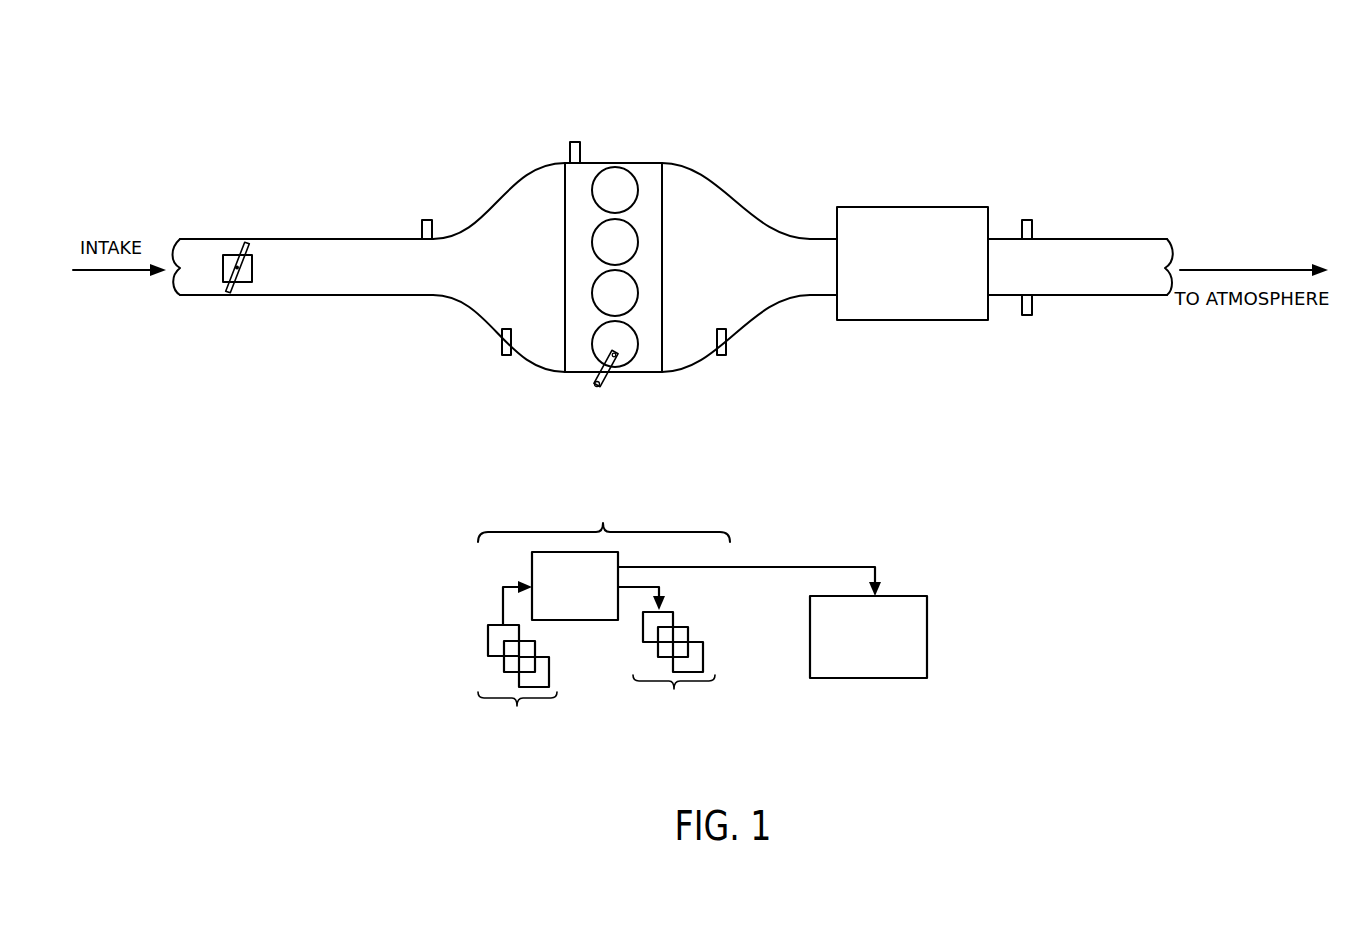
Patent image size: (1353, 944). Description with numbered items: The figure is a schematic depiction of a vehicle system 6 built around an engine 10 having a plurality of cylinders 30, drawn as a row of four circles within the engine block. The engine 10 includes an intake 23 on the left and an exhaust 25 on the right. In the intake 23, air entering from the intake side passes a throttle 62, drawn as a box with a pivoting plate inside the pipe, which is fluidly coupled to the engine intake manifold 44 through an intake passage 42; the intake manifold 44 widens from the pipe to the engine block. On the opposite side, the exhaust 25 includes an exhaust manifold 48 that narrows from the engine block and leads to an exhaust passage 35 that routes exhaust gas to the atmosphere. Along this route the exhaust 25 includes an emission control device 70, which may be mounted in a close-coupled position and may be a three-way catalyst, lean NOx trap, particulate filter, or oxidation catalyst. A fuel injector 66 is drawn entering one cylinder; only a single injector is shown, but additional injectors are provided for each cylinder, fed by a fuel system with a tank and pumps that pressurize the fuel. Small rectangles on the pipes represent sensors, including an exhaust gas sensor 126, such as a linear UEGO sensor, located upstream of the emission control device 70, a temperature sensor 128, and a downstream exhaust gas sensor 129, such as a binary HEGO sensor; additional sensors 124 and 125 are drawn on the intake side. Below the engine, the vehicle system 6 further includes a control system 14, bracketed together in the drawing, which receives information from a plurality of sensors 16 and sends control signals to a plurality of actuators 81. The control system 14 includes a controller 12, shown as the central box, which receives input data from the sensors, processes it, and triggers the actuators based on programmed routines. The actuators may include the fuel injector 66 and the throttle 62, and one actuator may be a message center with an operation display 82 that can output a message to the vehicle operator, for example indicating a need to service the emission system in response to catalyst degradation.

The vehicle system 6 is at (790, 125).
The engine 10 is at (662, 250).
The controller 12 is at (575, 586).
The control system 14 is at (679, 614).
The sensors 16 is at (517, 686).
The intake 23 is at (376, 216).
The exhaust 25 is at (1002, 175).
The cylinders 30 is at (633, 181).
The exhaust passage 35 is at (1119, 238).
The intake passage 42 is at (285, 298).
The engine intake manifold 44 is at (516, 278).
The exhaust manifold 48 is at (719, 278).
The throttle 62 is at (252, 277).
The fuel injector 66 is at (610, 376).
The emission control device 70 is at (900, 313).
The actuators 81 is at (674, 671).
The operation display 82 is at (855, 673).
The intake sensor 124 is at (433, 229).
The sensor 125 is at (500, 331).
The exhaust gas sensor 126 is at (727, 331).
The temperature sensor 128 is at (581, 152).
The downstream exhaust gas sensor 129 is at (1033, 320).